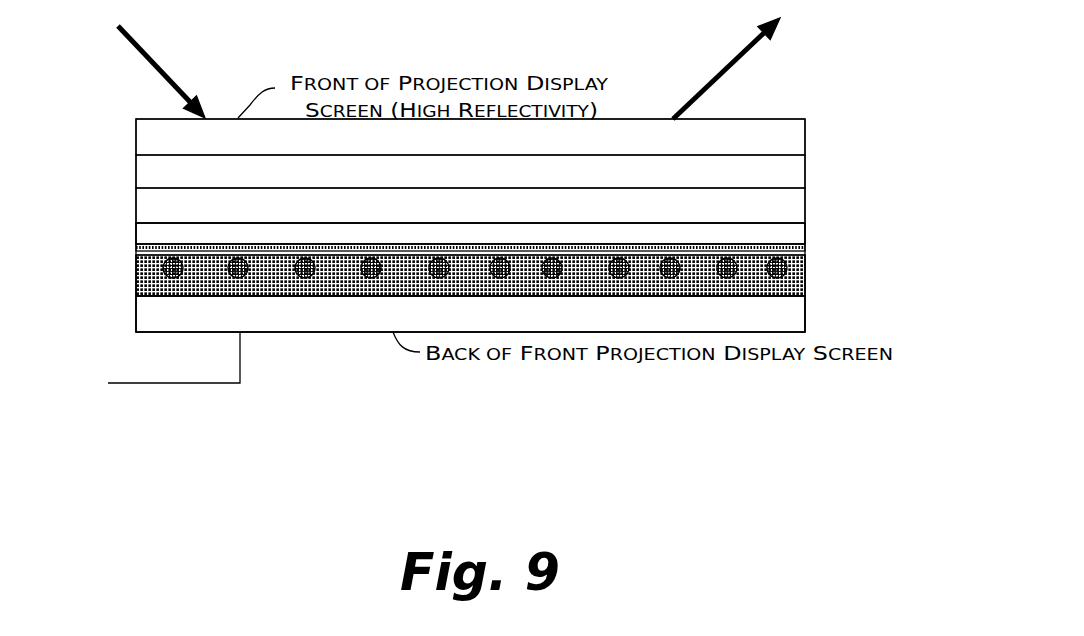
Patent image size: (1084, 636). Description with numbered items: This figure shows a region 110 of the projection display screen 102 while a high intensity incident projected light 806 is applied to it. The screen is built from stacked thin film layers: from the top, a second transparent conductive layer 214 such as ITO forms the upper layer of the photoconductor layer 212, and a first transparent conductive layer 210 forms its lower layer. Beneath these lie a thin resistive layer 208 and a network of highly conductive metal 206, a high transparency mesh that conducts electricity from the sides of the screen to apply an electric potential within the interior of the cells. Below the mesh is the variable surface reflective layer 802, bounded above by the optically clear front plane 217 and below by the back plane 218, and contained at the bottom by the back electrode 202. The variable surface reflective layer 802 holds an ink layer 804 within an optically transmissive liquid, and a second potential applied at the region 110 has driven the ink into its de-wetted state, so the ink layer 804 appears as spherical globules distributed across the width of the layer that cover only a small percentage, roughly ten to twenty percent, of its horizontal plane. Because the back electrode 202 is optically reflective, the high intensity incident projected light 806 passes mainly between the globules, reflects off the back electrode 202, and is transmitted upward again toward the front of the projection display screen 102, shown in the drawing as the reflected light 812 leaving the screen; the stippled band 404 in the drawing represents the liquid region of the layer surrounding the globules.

The projection display screen 102 is at (807, 119).
The second transparent conductive layer 214 is at (470, 137).
The photoconductor layer 212 is at (470, 171).
The first transparent conductive layer 210 is at (470, 205).
The thin resistive layer 208 is at (800, 236).
The network of highly conductive metal 206 is at (136, 243).
The front plane 217 is at (800, 253).
The ink layer region 404 is at (800, 290).
The variable surface reflective layer 802 is at (141, 268).
The ink layer 804 is at (306, 273).
The back plane 218 is at (795, 318).
The back electrode 202 is at (470, 314).
The high intensity incident projected light 806 is at (157, 58).
The reflected light 812 is at (730, 60).
The region 110 is at (236, 414).